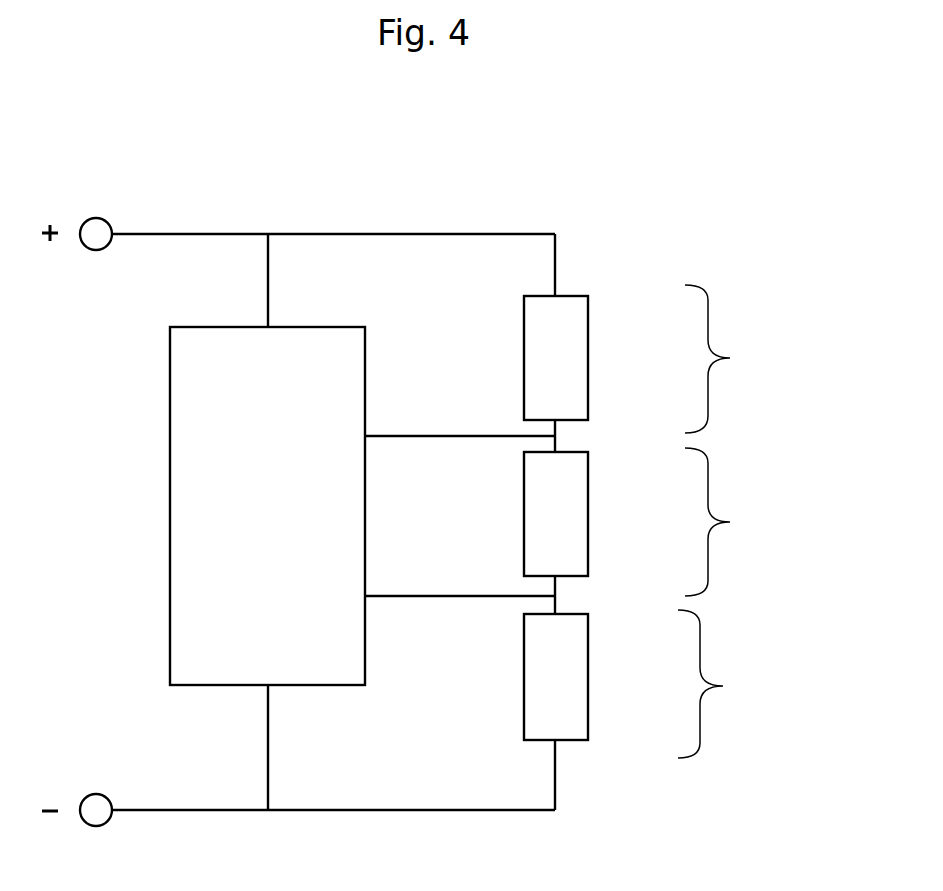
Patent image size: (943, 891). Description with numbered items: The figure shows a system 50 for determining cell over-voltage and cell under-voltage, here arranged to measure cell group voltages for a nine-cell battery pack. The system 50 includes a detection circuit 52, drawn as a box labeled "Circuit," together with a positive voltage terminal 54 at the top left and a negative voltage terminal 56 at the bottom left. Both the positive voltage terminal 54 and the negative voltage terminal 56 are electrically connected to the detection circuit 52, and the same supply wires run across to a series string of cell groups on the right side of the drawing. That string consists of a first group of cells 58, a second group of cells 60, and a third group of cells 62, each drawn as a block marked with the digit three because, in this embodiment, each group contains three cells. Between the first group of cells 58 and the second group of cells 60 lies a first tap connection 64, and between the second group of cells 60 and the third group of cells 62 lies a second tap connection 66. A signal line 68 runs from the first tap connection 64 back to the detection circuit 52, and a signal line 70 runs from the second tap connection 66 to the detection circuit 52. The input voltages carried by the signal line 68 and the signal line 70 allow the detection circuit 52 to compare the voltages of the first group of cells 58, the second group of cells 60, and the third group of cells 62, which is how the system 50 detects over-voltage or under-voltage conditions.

The system 50 is at (610, 98).
The detection circuit 52 is at (161, 447).
The positive voltage terminal 54 is at (190, 214).
The negative voltage terminal 56 is at (144, 790).
The first group of cells 58 is at (741, 348).
The second group of cells 60 is at (741, 511).
The third group of cells 62 is at (746, 653).
The first tap connection 64 is at (574, 437).
The second tap connection 66 is at (574, 596).
The signal line 68 is at (484, 419).
The signal line 70 is at (472, 580).